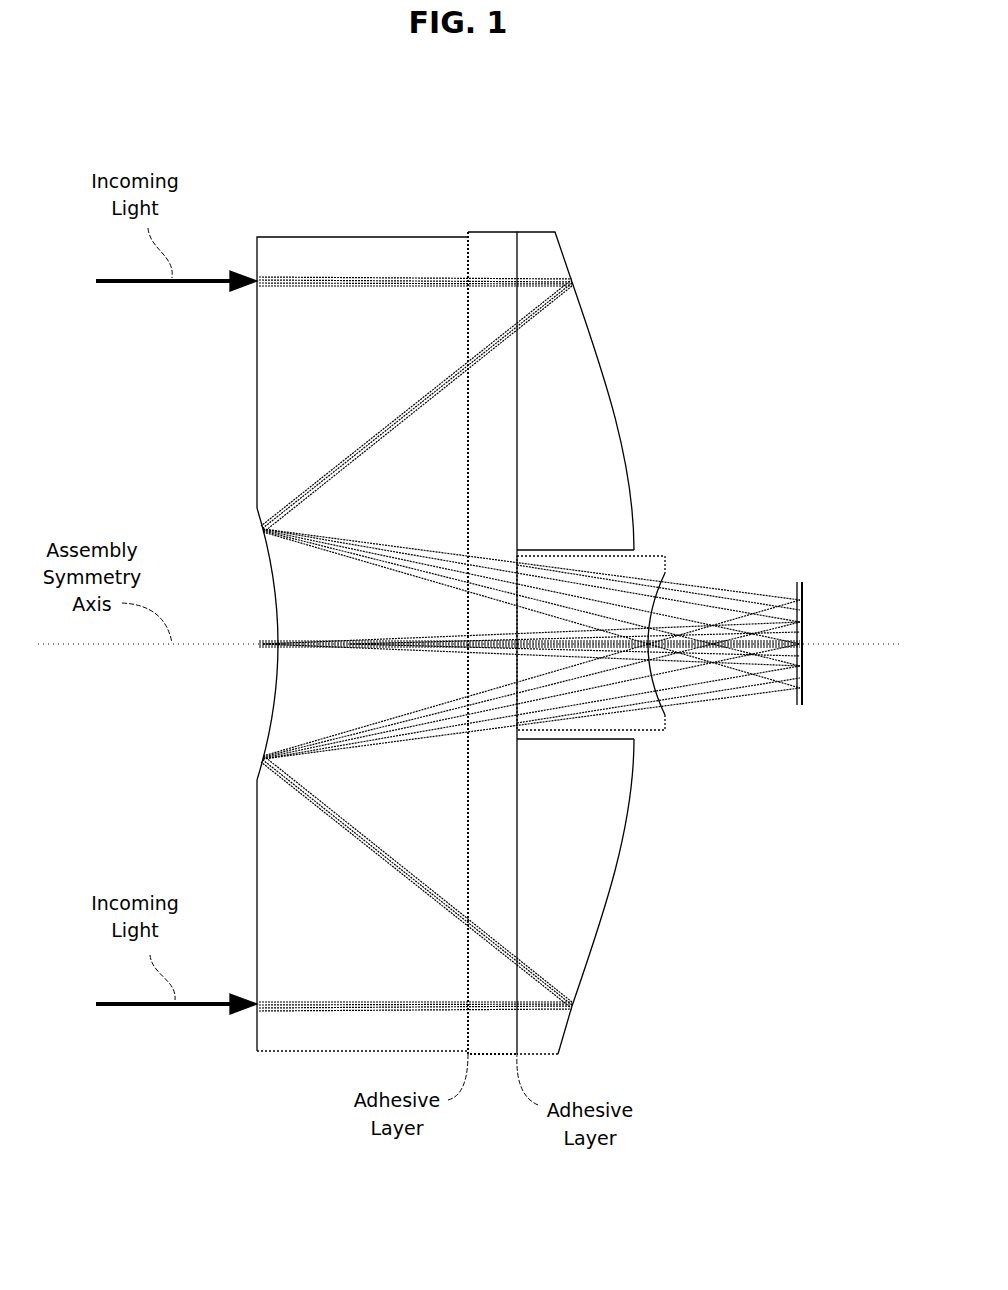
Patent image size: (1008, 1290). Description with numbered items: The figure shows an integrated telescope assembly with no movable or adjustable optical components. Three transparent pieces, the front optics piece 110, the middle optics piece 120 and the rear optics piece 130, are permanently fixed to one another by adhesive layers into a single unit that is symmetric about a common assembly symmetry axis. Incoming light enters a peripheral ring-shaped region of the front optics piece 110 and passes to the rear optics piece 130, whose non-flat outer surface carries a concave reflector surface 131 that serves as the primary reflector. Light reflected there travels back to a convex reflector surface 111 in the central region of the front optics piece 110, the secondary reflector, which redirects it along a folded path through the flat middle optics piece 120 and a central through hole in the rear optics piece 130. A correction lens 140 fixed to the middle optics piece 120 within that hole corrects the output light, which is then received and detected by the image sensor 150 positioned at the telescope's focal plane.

The front optics piece 110 is at (422, 237).
The convex reflector surface 111 is at (268, 558).
The middle optics piece 120 is at (489, 232).
The rear optics piece 130 is at (550, 232).
The concave reflector surface 131 is at (610, 405).
The correction lens 140 is at (643, 563).
The image sensor 150 is at (800, 707).